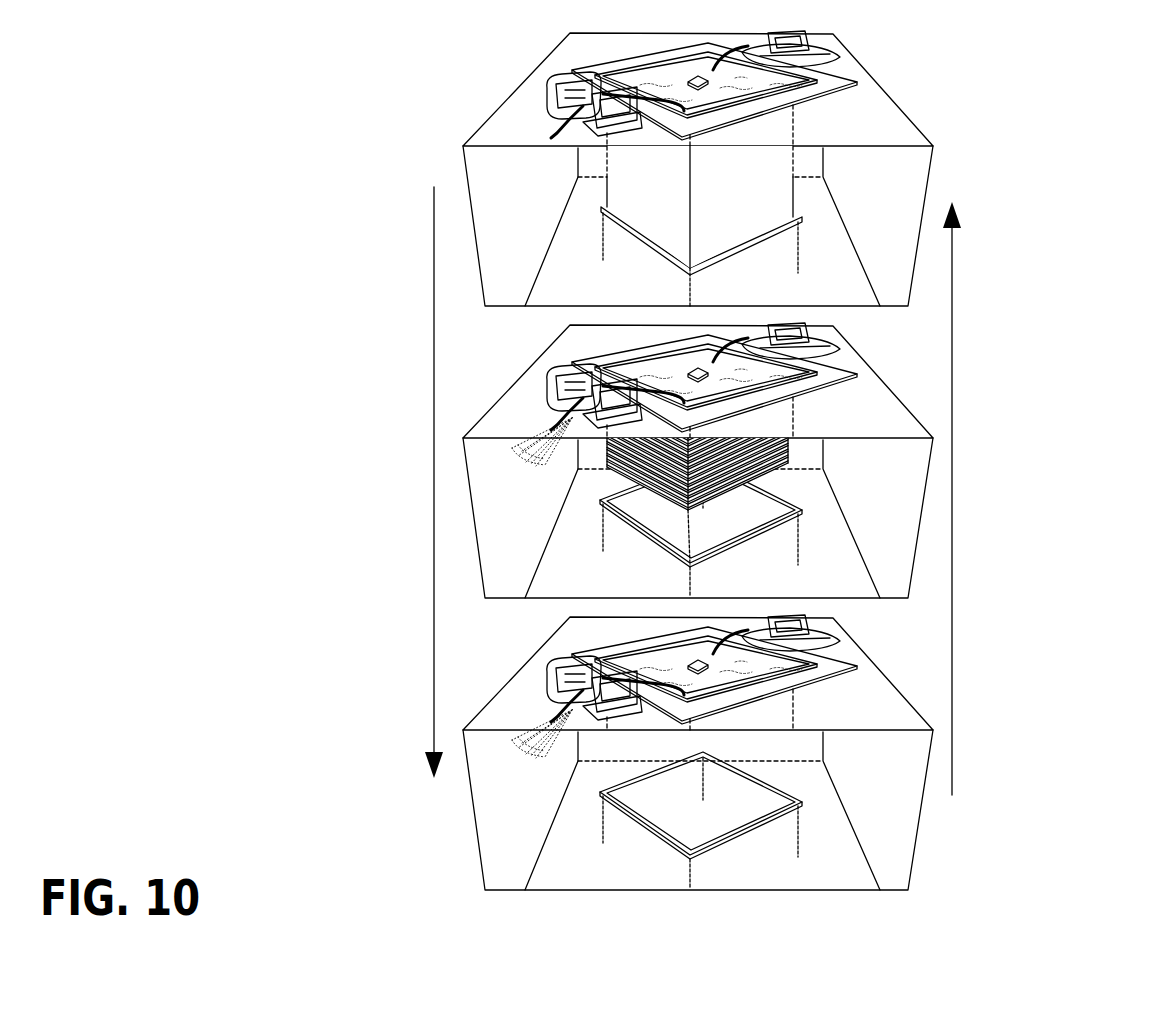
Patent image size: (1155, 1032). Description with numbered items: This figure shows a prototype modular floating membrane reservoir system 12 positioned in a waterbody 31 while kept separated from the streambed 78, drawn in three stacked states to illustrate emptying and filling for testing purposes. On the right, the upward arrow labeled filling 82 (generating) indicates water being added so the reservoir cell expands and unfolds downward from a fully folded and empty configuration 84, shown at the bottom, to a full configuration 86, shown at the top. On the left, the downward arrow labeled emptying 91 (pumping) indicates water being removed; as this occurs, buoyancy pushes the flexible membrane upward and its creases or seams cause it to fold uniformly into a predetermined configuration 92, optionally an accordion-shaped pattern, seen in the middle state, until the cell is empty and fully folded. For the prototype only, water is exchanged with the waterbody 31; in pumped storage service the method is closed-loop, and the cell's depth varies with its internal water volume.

The modular floating membrane reservoir system 12 is at (906, 58).
The waterbody 31 is at (490, 163).
The streambed 78 is at (832, 293).
The full configuration 86 is at (960, 174).
The filling 82 is at (953, 587).
The fully folded and empty configuration 84 is at (988, 678).
The emptying 91 is at (433, 483).
The predetermined configuration 92 is at (598, 481).